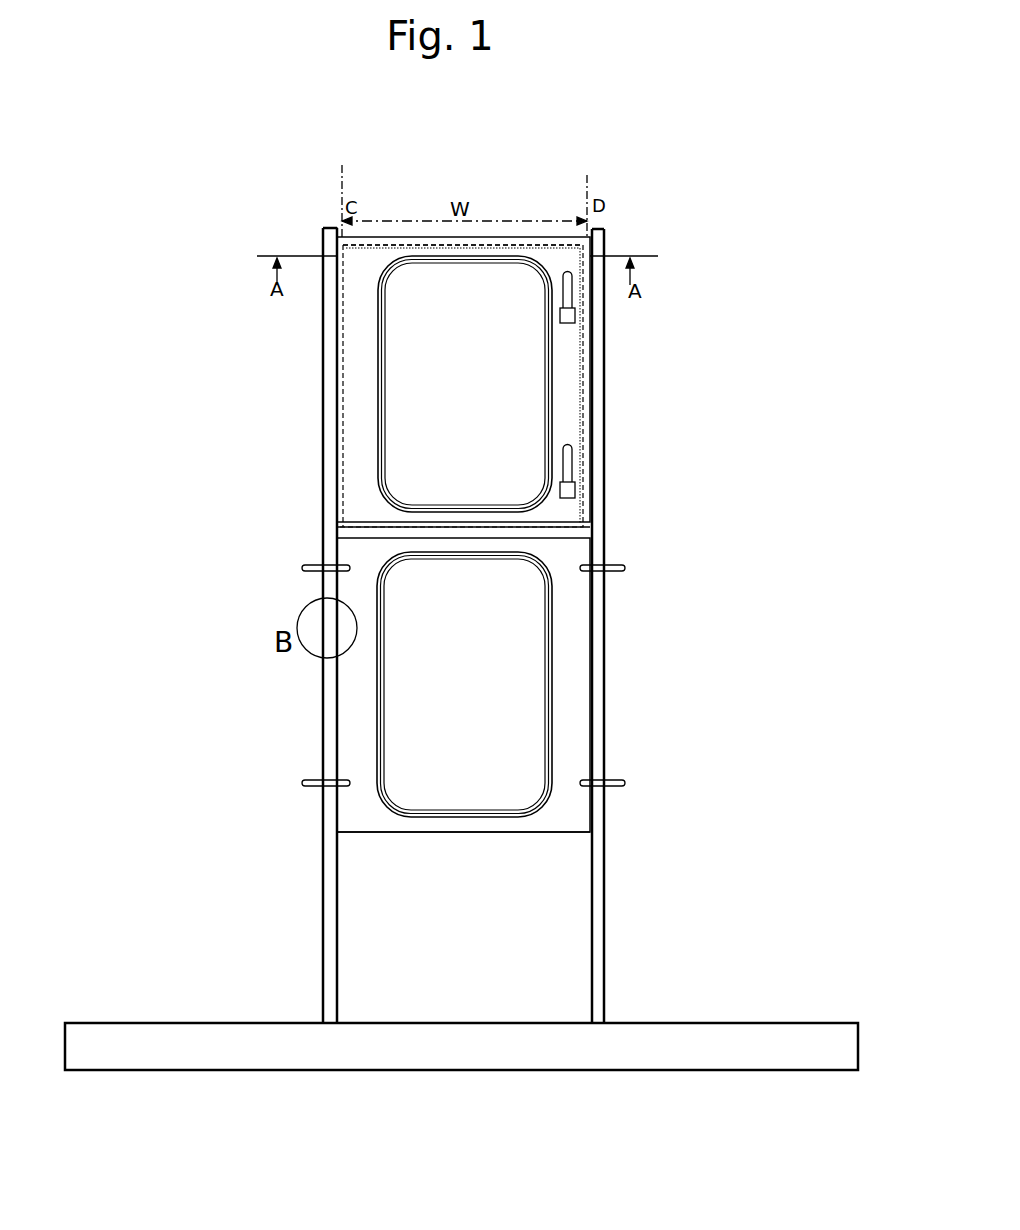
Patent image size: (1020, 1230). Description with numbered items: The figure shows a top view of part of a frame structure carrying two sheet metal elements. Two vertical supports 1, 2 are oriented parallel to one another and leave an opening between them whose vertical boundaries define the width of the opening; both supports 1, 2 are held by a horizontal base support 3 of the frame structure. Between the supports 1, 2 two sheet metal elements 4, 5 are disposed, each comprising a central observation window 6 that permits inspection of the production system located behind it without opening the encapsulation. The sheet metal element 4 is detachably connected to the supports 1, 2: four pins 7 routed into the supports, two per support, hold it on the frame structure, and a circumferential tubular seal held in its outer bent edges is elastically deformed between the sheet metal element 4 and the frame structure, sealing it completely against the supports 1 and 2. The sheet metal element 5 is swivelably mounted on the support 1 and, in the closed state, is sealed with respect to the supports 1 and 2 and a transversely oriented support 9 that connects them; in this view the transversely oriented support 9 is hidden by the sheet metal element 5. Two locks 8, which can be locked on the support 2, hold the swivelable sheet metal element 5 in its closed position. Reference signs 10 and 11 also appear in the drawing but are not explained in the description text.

The vertical support 1 is at (323, 958).
The vertical support 2 is at (592, 955).
The horizontal base support 3 is at (778, 1050).
The sheet metal element 4 is at (578, 655).
The sheet metal element 5 is at (360, 385).
The central observation window 6 is at (452, 440).
The pin 7 is at (302, 568).
The lock 8 is at (565, 313).
The transversely oriented support 9 is at (590, 528).
The upper post corner 10 is at (338, 235).
The top seal 11 is at (540, 246).